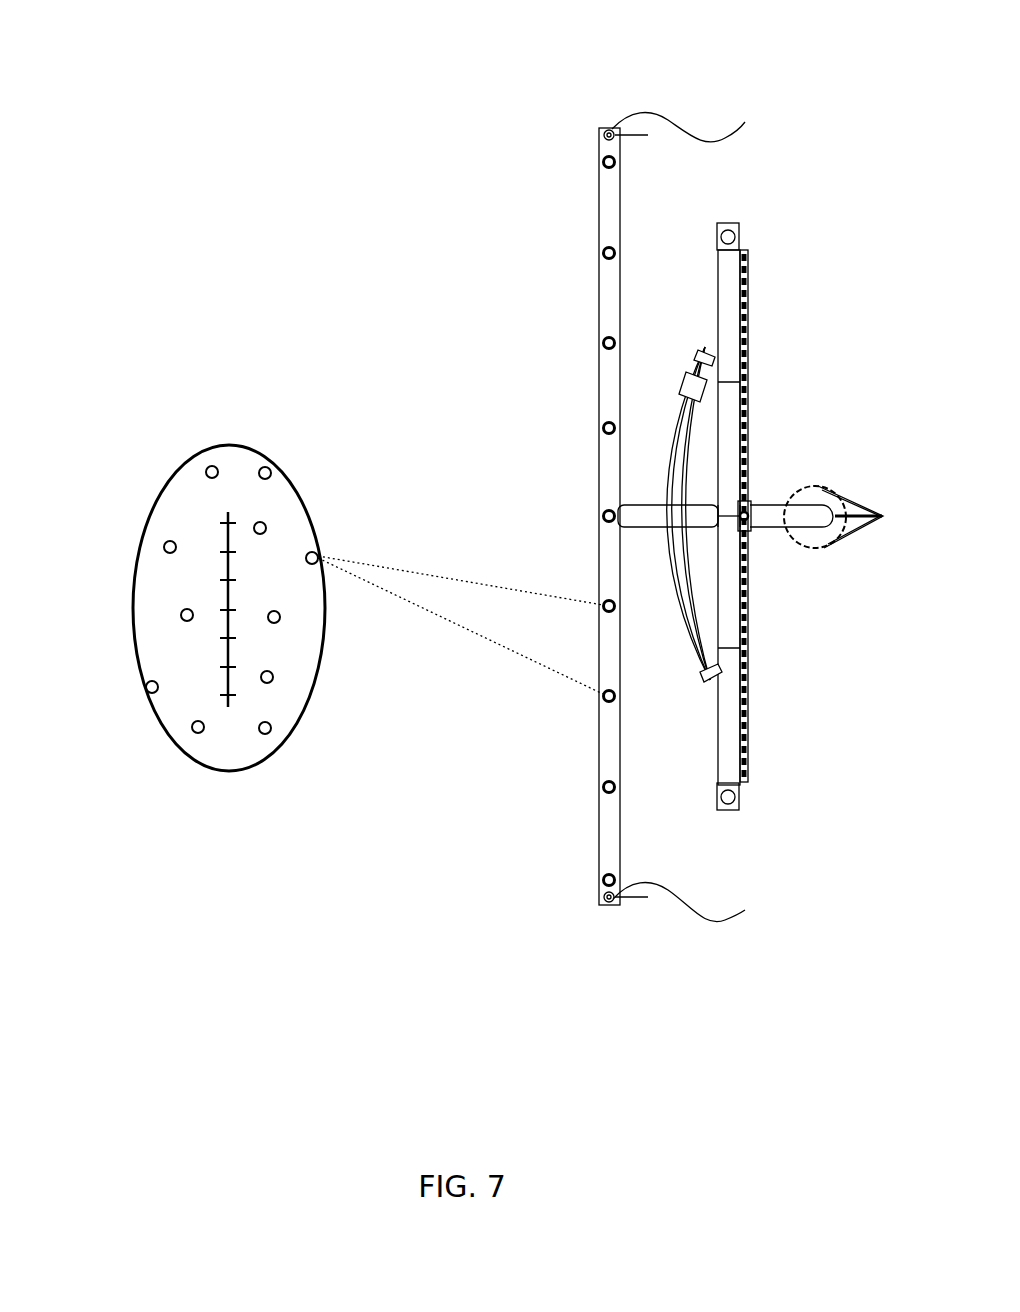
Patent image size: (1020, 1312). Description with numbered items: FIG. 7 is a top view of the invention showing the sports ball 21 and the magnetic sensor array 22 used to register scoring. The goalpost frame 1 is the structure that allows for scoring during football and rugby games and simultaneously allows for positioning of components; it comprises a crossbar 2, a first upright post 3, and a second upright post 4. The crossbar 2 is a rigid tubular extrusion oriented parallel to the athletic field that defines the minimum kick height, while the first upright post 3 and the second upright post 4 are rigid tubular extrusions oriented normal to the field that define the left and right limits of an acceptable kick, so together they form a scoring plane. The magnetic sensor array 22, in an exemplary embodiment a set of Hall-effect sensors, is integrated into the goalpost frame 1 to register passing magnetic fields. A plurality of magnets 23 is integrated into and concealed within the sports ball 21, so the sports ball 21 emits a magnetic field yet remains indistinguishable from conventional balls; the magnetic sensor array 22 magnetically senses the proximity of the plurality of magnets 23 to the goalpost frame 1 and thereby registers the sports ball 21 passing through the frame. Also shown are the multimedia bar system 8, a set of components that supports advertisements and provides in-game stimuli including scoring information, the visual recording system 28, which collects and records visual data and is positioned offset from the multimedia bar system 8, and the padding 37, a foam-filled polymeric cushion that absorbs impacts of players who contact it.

The goalpost frame 1 is at (597, 75).
The crossbar 2 is at (607, 467).
The first upright post 3 is at (607, 135).
The second upright post 4 is at (609, 907).
The multimedia bar system 8 is at (742, 186).
The sports ball 21 is at (185, 505).
The magnetic sensor array 22 is at (603, 253).
The plurality of magnets 23 is at (268, 470).
The visual recording system 28 is at (667, 372).
The padding 37 is at (822, 497).